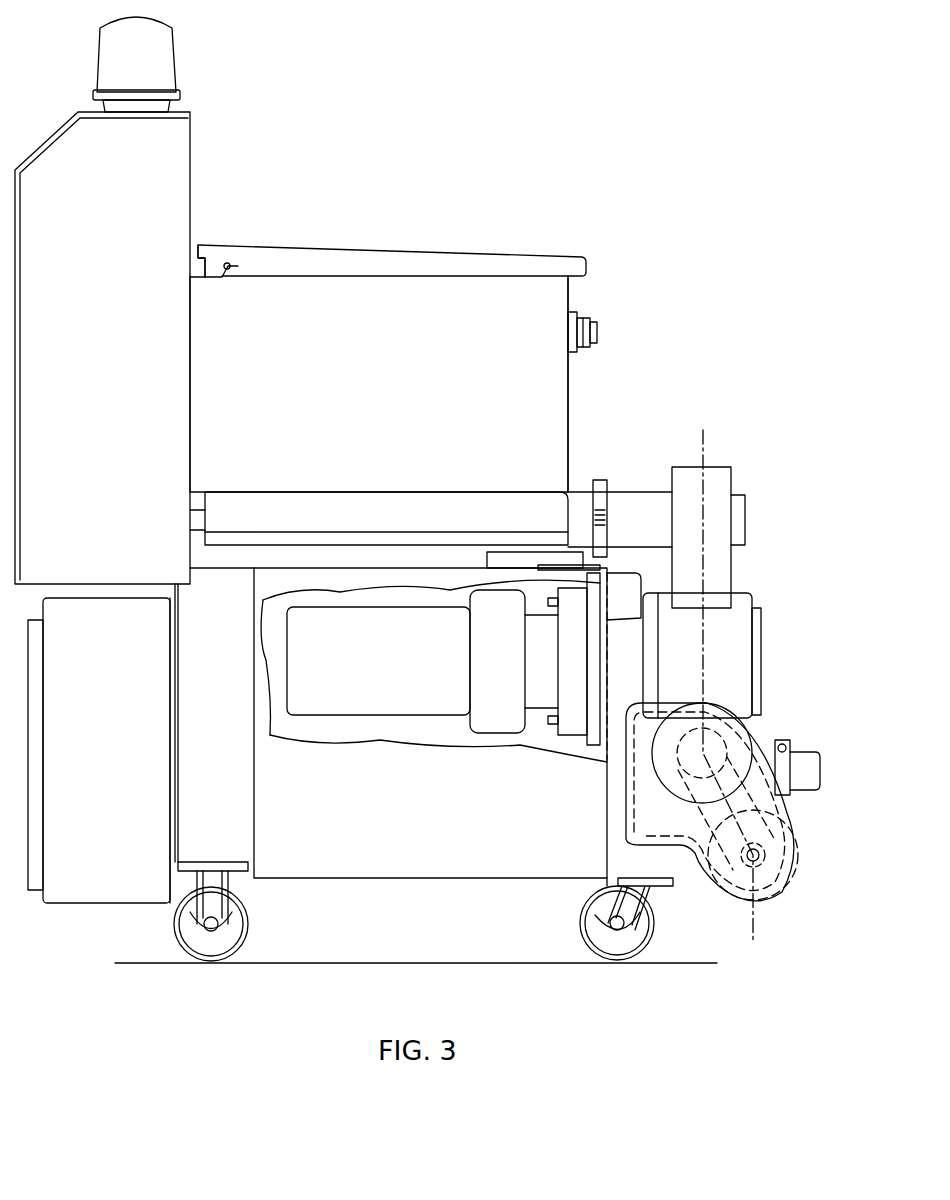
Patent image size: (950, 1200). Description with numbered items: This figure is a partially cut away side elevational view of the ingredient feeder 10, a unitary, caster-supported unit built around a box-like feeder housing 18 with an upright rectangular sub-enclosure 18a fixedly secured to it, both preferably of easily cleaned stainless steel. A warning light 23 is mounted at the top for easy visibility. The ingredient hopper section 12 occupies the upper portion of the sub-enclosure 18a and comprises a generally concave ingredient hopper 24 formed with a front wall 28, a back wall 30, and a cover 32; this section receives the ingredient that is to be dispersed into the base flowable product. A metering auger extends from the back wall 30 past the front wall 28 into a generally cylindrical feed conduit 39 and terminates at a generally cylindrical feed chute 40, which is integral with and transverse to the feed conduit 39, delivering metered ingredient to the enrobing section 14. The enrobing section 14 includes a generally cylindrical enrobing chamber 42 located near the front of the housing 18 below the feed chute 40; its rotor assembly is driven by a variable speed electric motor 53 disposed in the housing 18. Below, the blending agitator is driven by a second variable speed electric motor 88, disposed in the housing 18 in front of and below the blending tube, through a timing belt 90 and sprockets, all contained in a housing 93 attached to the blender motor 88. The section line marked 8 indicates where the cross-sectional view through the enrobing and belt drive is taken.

The ingredient feeder 10 is at (455, 176).
The ingredient hopper section 12 is at (580, 378).
The enrobing section 14 is at (782, 597).
The feeder housing 18 is at (360, 870).
The sub-enclosure 18a is at (175, 158).
The warning light 23 is at (165, 50).
The ingredient hopper 24 is at (517, 290).
The front wall 28 is at (570, 302).
The back wall 30 is at (190, 306).
The cover 32 is at (450, 256).
The feed conduit 39 is at (625, 490).
The feed chute 40 is at (731, 478).
The enrobing chamber 42 is at (762, 645).
The variable speed electric motor 53 is at (418, 700).
The variable speed electric motor 88 is at (778, 872).
The timing belt 90 is at (753, 742).
The housing 93 is at (792, 822).
The section line 8- 8 is at (676, 432).